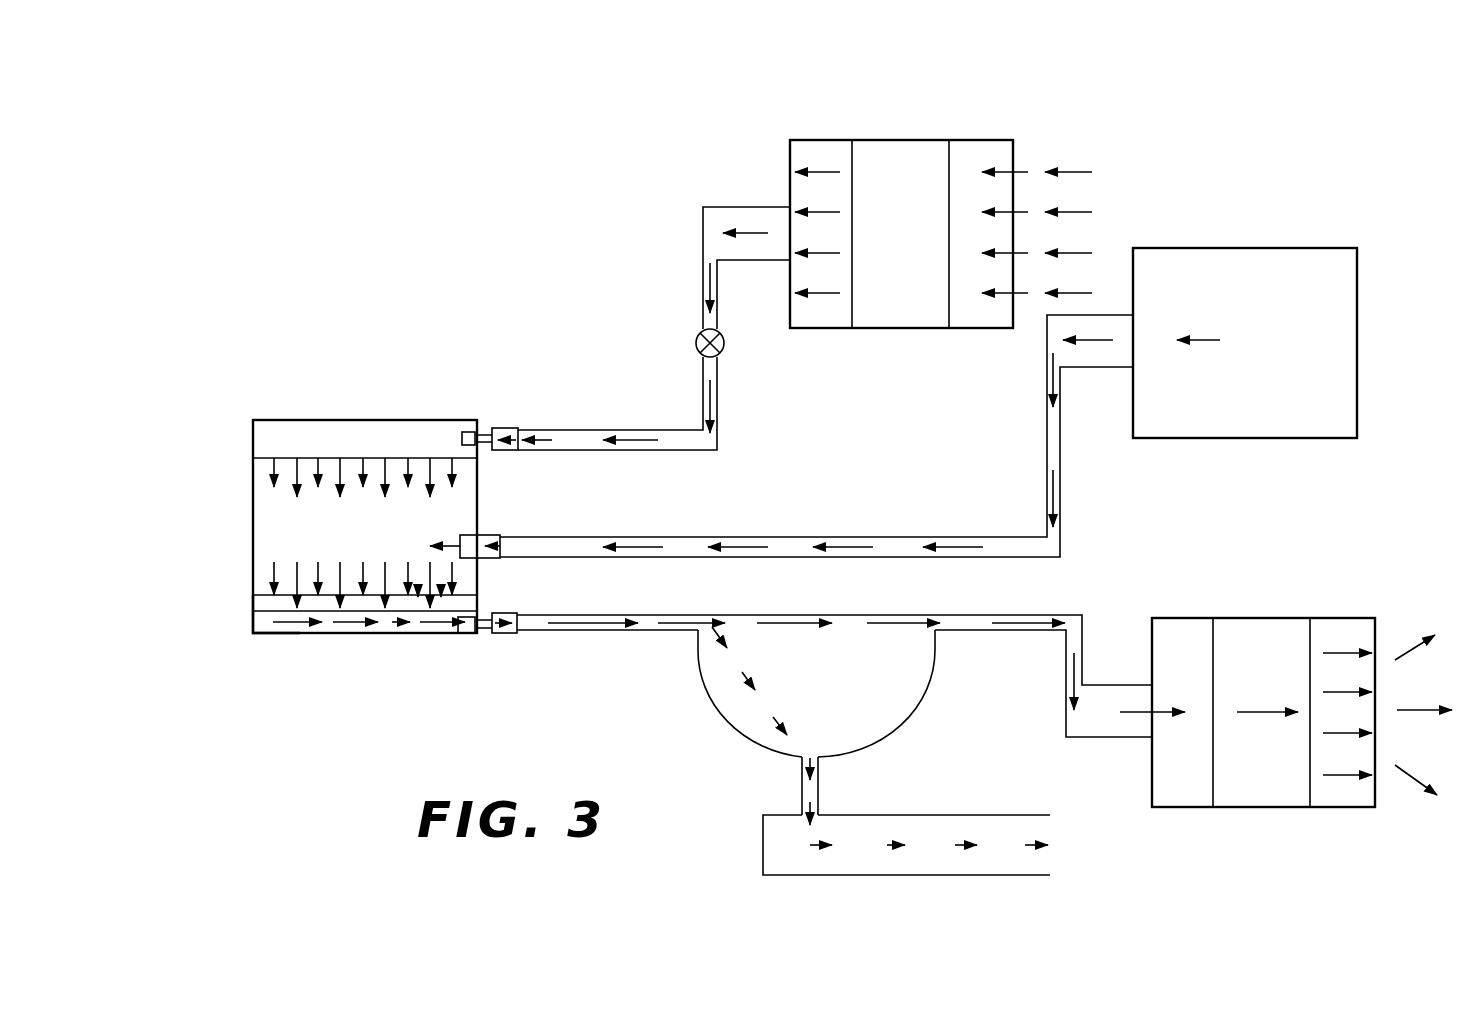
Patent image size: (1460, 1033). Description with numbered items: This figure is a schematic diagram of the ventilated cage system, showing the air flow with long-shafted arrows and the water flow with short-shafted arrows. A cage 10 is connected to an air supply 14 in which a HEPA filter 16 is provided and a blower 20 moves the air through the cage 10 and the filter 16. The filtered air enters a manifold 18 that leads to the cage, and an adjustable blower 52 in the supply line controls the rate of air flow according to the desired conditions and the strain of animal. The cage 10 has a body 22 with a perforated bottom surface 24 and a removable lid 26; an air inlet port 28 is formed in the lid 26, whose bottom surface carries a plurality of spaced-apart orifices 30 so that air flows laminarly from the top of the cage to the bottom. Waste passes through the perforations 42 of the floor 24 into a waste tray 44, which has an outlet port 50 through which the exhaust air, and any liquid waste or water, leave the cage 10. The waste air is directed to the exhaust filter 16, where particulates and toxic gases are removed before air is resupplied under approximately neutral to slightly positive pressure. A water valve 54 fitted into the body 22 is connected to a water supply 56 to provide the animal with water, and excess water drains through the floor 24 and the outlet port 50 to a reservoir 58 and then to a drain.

The cage 10 is at (227, 473).
The air supply 14 is at (837, 102).
The filter 16 is at (908, 330).
The manifold 18 is at (723, 207).
The blower 20 is at (812, 140).
The body 22 is at (252, 528).
The bottom surface 24 is at (283, 580).
The lid 26 is at (267, 430).
The air inlet port 28 is at (470, 430).
The orifices 30 is at (368, 468).
The perforations 42 is at (253, 593).
The waste tray 44 is at (387, 635).
The outlet port 50 is at (460, 637).
The adjustable blower 52 is at (695, 340).
The water valve 54 is at (487, 533).
The water supply 56 is at (1350, 285).
The reservoir 58 is at (738, 725).